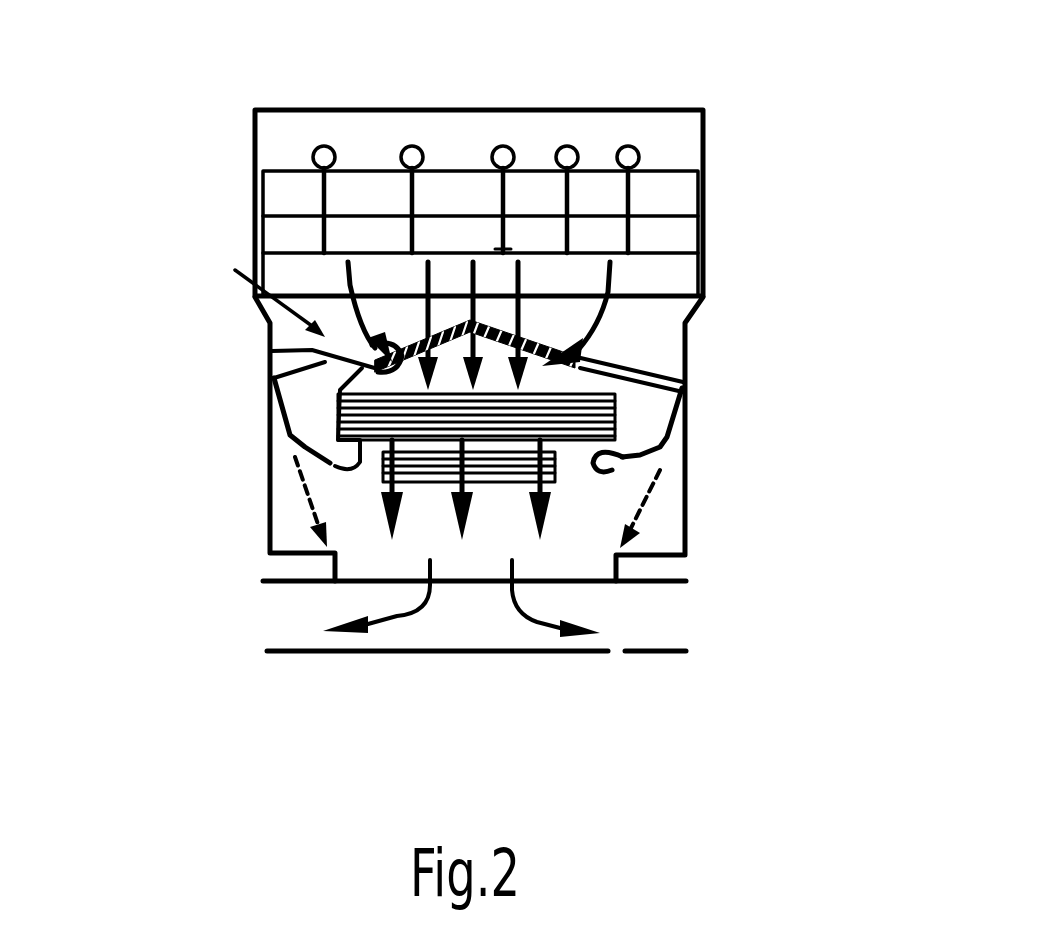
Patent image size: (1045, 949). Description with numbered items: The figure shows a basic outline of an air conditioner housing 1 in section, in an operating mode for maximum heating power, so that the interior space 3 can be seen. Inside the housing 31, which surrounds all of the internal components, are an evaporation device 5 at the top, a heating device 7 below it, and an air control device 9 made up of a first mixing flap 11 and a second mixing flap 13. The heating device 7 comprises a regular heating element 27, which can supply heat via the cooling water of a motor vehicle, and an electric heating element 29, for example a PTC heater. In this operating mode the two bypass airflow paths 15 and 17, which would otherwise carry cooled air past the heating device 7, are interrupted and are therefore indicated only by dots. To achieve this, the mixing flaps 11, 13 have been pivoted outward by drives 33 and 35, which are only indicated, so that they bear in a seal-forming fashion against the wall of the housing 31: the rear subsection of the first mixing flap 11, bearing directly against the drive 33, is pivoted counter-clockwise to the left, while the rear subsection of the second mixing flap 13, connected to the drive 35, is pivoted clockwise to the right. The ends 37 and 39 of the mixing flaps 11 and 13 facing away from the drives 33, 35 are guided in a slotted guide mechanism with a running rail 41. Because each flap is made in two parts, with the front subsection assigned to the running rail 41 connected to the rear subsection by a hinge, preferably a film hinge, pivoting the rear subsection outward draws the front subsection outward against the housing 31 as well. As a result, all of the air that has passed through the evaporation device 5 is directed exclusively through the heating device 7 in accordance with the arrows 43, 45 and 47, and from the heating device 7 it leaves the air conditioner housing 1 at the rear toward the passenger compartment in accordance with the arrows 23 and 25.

The air conditioner housing 1 is at (235, 457).
The interior space 3 is at (663, 318).
The evaporation device 5 is at (667, 278).
The heating device 7 is at (655, 408).
The air control device 9 is at (235, 270).
The first mixing flap 11 is at (245, 407).
The second mixing flap 13 is at (690, 352).
The airflow path 15 is at (297, 483).
The airflow path 17 is at (663, 478).
The arrow 23 is at (398, 617).
The arrow 25 is at (537, 622).
The regular heating element 27 is at (657, 413).
The electric heating element 29 is at (560, 468).
The housing 31 is at (705, 133).
The drive 33 is at (352, 472).
The drive 35 is at (660, 441).
The end of mixing flap 37 is at (388, 356).
The end of mixing flap 39 is at (580, 352).
The running rail 41 is at (272, 351).
The arrow 43 is at (440, 330).
The arrow 45 is at (500, 335).
The arrow 47 is at (539, 340).